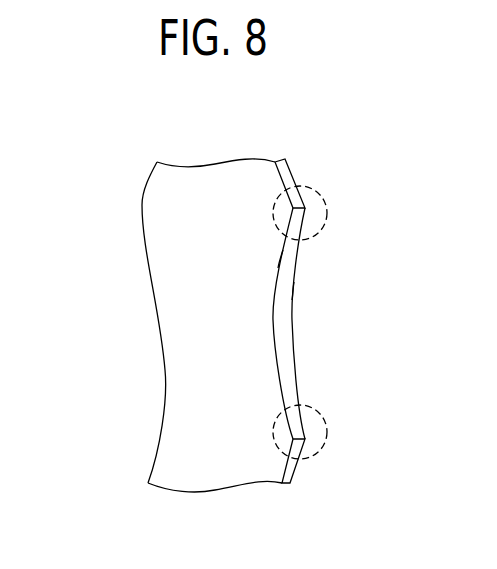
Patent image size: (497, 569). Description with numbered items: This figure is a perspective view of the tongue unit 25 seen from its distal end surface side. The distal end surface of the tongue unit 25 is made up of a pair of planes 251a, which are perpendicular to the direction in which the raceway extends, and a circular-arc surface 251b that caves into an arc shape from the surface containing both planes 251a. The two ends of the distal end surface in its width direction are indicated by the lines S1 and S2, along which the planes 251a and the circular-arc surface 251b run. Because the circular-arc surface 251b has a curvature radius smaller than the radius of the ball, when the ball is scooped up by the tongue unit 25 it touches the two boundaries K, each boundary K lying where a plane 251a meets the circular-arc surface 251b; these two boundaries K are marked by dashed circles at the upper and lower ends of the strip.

The tongue unit 25 is at (138, 200).
The planes 251a is at (287, 180).
The circular-arc surface 251b is at (280, 320).
The line indicating one end in the width direction of the distal end surface S1 is at (292, 290).
The line indicating the other end in the width direction of the distal end surface S2 is at (282, 257).
The boundaries K is at (328, 215).